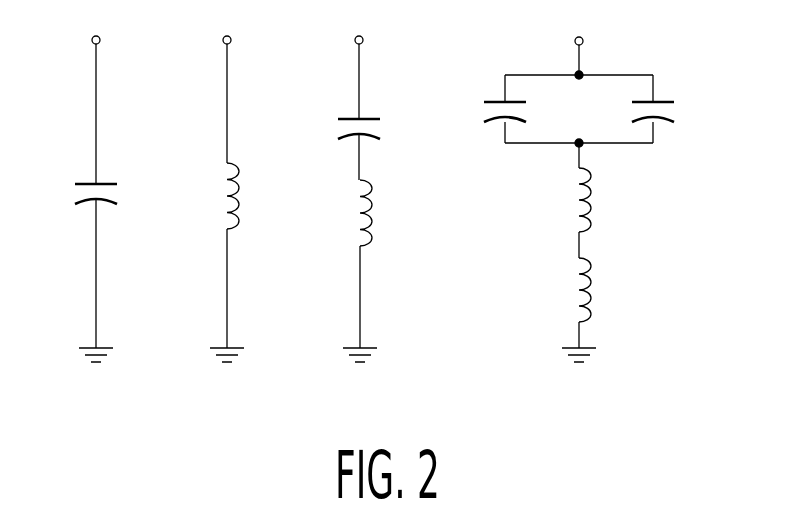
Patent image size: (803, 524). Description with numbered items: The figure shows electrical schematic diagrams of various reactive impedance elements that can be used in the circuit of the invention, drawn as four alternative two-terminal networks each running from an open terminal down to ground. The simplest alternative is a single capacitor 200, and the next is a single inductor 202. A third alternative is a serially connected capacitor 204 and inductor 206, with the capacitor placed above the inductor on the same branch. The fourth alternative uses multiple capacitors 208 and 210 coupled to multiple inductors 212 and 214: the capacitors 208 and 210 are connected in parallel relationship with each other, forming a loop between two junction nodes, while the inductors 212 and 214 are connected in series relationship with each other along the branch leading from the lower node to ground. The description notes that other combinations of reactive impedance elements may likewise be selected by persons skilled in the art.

The capacitor 200 is at (86, 181).
The inductor 202 is at (233, 166).
The capacitor 204 is at (348, 116).
The inductor 206 is at (372, 222).
The capacitor 208 is at (493, 98).
The capacitor 210 is at (667, 95).
The inductor 212 is at (591, 197).
The inductor 214 is at (591, 296).